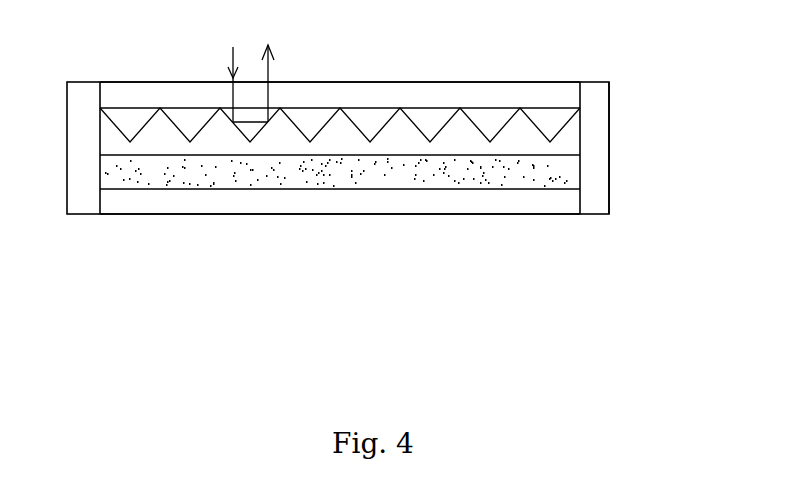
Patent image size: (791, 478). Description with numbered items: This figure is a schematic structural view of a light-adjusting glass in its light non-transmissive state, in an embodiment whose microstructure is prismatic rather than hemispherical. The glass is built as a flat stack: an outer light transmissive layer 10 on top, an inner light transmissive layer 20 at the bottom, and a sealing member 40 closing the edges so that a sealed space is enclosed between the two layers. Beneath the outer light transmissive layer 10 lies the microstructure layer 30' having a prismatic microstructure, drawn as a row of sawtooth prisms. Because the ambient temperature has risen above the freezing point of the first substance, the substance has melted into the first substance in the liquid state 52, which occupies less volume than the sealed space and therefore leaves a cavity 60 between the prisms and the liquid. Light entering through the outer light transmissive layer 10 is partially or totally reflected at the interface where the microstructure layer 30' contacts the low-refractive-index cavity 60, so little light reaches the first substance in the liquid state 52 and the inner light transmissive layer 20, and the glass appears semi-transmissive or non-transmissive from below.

The outer light transmissive layer 10 is at (563, 96).
The microstructure layer having a prismatic microstructure 30' is at (340, 89).
The cavity 60 is at (288, 142).
The first substance in the liquid state 52 is at (385, 173).
The inner light transmissive layer 20 is at (556, 205).
The sealing member 40 is at (596, 133).